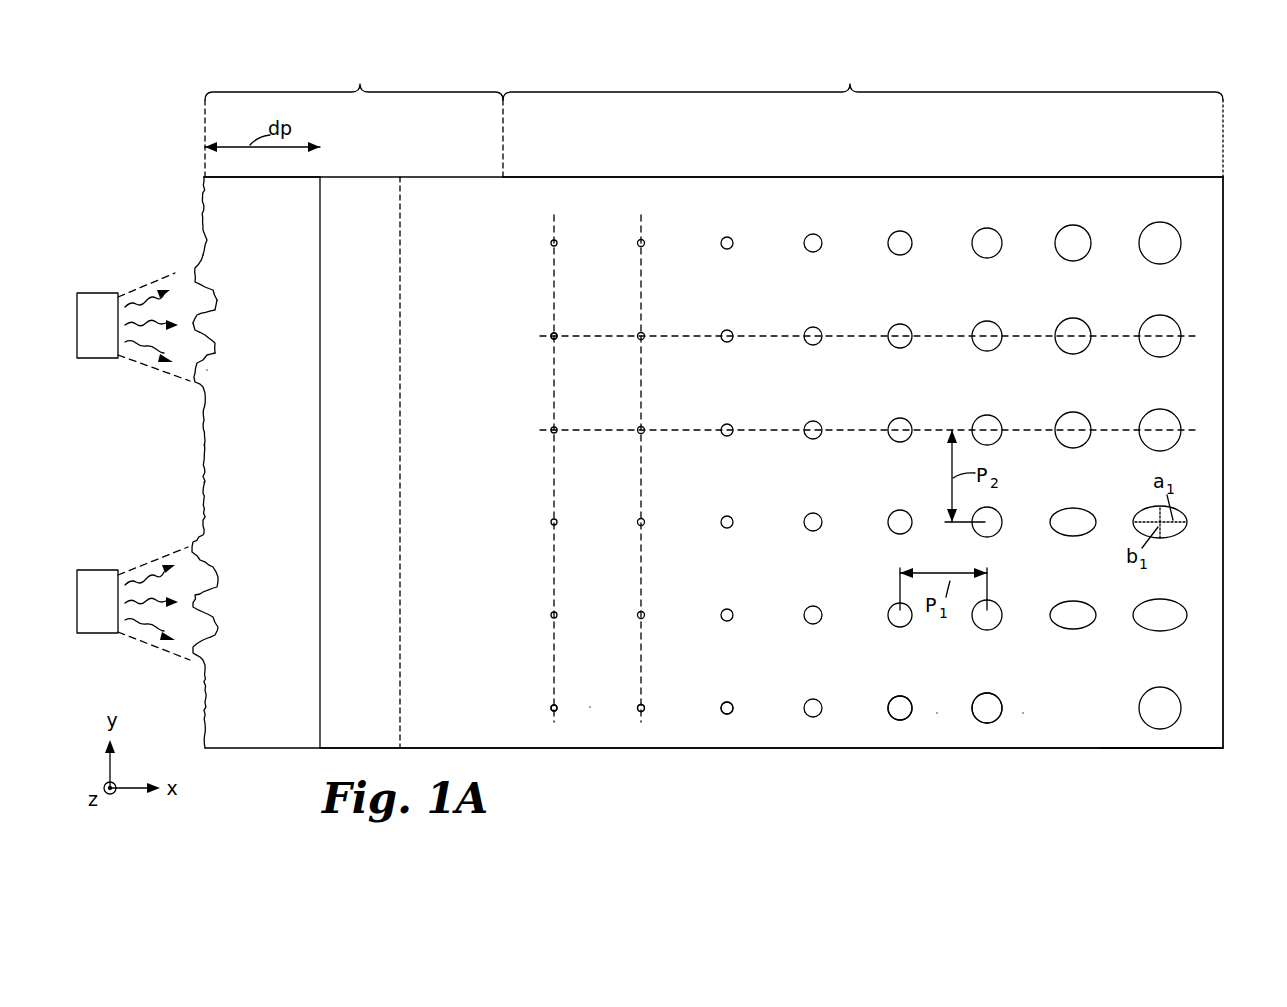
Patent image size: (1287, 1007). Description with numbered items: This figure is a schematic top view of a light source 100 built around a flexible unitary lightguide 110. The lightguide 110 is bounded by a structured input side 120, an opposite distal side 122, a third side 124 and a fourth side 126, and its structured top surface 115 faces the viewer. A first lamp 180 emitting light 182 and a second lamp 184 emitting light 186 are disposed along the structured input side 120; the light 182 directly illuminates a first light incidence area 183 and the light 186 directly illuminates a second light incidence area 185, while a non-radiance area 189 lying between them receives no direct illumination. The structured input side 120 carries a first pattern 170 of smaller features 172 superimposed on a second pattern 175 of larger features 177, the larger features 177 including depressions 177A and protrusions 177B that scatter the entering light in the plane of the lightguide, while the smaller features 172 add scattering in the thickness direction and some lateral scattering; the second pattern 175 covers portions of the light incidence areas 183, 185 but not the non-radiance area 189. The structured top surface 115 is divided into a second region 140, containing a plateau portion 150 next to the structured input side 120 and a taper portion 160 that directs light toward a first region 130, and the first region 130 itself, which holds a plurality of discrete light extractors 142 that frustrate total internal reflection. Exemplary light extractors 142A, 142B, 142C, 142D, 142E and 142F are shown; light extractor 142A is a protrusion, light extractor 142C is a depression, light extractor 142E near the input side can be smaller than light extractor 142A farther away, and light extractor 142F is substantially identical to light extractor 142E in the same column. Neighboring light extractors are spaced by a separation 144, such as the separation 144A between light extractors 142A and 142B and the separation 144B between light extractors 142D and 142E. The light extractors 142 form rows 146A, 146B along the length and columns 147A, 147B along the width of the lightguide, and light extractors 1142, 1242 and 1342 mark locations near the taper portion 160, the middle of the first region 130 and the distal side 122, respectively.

The light source 100 is at (1190, 78).
The flexible unitary lightguide 110 is at (1097, 177).
The structured top surface 115 is at (1197, 730).
The structured input side 120 is at (205, 194).
The distal side 122 is at (1225, 237).
The third side 124 is at (1117, 750).
The fourth side 126 is at (882, 177).
The first region 130 is at (863, 119).
The second region 140 is at (354, 119).
The discrete light extractors 142 is at (1075, 726).
The light extractor 142A is at (985, 723).
The light extractor 142B is at (898, 720).
The light extractor 142C is at (723, 714).
The light extractor 142D is at (638, 712).
The light extractor 142E is at (551, 711).
The light extractor 142F is at (551, 332).
The separation 144 is at (1023, 713).
The separation 144A is at (937, 713).
The separation 144B is at (590, 707).
The row of light extractors 146A is at (1108, 335).
The row of light extractors 146B is at (1108, 430).
The column of light extractors 147A is at (555, 270).
The column of light extractors 147B is at (642, 282).
The plateau portion 150 is at (217, 190).
The taper portion 160 is at (372, 195).
The first pattern 170 is at (204, 248).
The smaller features 172 is at (208, 482).
The second pattern 175 is at (218, 353).
The larger features 177 is at (207, 370).
The depressions 177A is at (218, 297).
The protrusions 177B is at (194, 322).
The first lamp 180 is at (97, 578).
The light 182 is at (143, 627).
The first light incidence area 183 is at (180, 553).
The second lamp 184 is at (97, 300).
The second light incidence area 185 is at (180, 273).
The light 186 is at (143, 350).
The non-radiance area 189 is at (208, 445).
The light extractors 1142 is at (637, 427).
The light extractors 1242 is at (806, 421).
The light extractors 1342 is at (1061, 415).